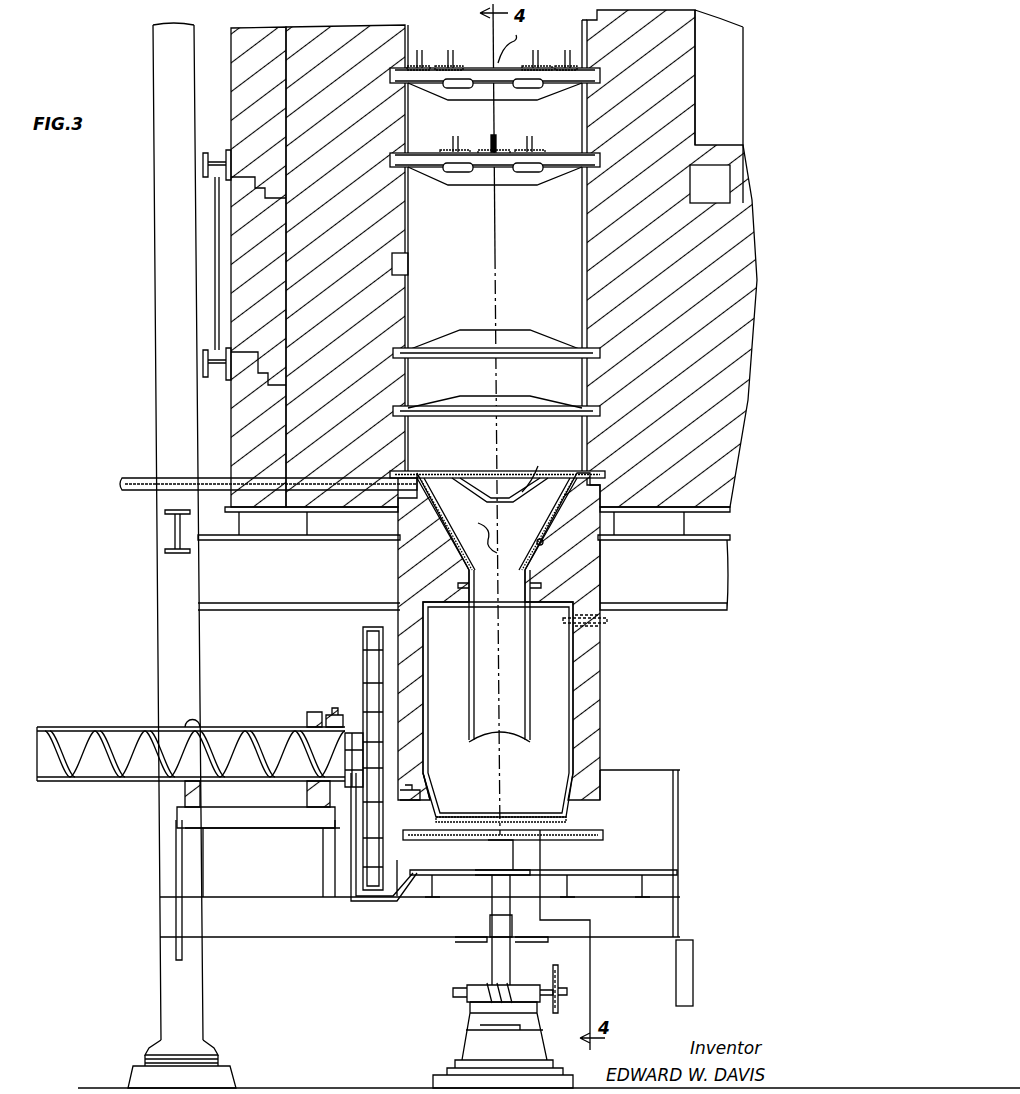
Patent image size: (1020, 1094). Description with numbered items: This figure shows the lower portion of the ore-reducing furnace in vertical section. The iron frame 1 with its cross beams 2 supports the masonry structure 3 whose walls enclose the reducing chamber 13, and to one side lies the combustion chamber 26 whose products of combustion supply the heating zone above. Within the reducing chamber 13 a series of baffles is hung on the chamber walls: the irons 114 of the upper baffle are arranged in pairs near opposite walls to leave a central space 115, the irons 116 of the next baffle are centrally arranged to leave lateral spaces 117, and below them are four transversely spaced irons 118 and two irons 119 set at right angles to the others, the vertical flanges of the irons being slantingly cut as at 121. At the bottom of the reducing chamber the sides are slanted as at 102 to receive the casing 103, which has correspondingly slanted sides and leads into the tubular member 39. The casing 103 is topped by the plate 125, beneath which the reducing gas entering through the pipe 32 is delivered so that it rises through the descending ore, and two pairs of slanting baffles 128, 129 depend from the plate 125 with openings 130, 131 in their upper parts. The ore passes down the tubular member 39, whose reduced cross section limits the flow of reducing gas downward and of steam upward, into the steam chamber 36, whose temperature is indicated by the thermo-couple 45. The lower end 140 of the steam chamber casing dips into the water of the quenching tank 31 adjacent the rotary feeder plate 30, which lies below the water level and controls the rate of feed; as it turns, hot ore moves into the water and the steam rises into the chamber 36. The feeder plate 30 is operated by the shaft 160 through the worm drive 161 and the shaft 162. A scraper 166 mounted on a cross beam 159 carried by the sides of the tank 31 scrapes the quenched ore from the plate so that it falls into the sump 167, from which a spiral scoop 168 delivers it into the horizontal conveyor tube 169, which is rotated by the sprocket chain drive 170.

The iron frame 1 is at (172, 215).
The cross beams 2 is at (690, 523).
The masonry structure 3 is at (740, 266).
The reducing chamber 13 is at (365, 419).
The combustion chamber 26 is at (720, 108).
The rotary feeder plate 30 is at (604, 839).
The quenching tank 31 is at (640, 834).
The pipe 32 is at (208, 478).
The steam chamber 36 is at (566, 737).
The tubular member 39 is at (518, 689).
The thermo-couple 45 is at (607, 621).
The slanted sides 102 is at (452, 540).
The casing 103 is at (580, 556).
The irons 114 is at (451, 50).
The central space 115 is at (520, 46).
The irons 116 is at (528, 150).
The lateral spaces 117 is at (418, 178).
The irons 118 is at (513, 340).
The irons 119 is at (530, 400).
The slanting cut 121 is at (420, 348).
The plate 125 is at (510, 471).
The slanting baffles 128 is at (541, 470).
The slanting baffles 129 is at (510, 545).
The openings 130 is at (483, 471).
The openings 131 is at (462, 478).
The lower end of steam chamber casing 140 is at (570, 817).
The cross beam 159 is at (415, 797).
The scraper 166 is at (420, 802).
The sump 167 is at (351, 901).
The spiral scoop 168 is at (363, 666).
The horizontal conveyor tube 169 is at (257, 727).
The sprocket chain drive 170 is at (313, 712).
The shaft 160 is at (498, 963).
The worm drive 161 is at (480, 995).
The shaft 162 is at (549, 996).